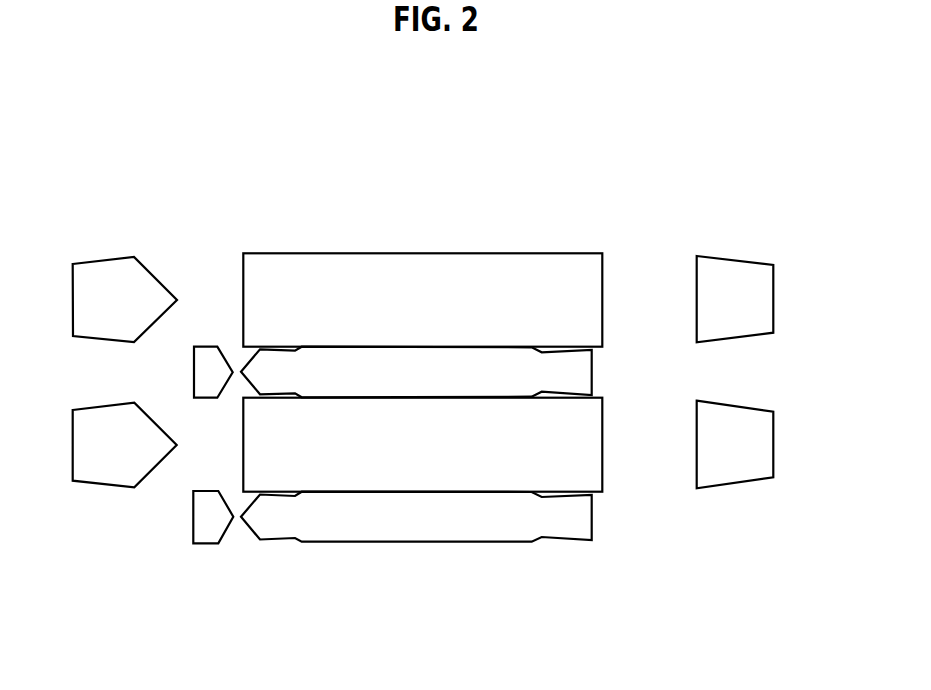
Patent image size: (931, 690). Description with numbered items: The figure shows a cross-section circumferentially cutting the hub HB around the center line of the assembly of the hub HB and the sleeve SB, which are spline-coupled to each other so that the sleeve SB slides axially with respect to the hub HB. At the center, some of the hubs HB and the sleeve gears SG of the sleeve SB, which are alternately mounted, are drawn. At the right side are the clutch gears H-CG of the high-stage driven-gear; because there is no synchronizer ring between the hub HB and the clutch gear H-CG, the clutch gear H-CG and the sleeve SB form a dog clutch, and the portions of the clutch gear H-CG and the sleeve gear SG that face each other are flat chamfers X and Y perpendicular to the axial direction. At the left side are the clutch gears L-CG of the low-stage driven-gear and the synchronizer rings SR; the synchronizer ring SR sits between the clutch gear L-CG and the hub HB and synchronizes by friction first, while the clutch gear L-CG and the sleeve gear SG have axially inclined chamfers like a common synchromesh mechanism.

The clutch gear of the low-stage driven-gear L-CG is at (107, 268).
The clutch gear of the high-stage driven-gear H-CG is at (742, 270).
The hub HB is at (317, 280).
The sleeve gear SG is at (460, 373).
The sleeve SB is at (463, 532).
The synchronizer ring SR is at (209, 535).
The flat chamfer X is at (697, 298).
The flat chamfer Y is at (592, 372).